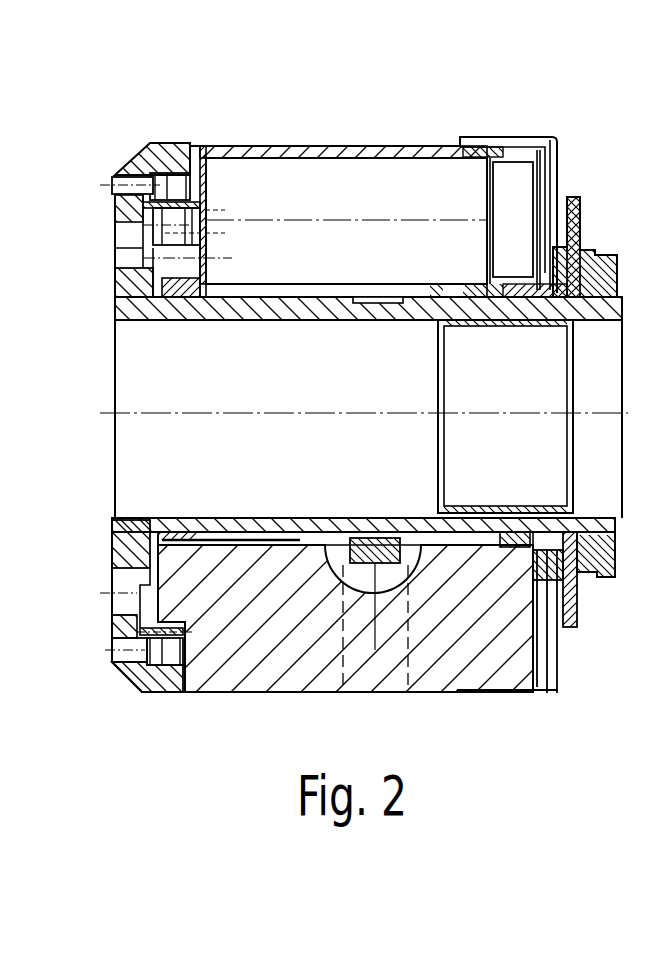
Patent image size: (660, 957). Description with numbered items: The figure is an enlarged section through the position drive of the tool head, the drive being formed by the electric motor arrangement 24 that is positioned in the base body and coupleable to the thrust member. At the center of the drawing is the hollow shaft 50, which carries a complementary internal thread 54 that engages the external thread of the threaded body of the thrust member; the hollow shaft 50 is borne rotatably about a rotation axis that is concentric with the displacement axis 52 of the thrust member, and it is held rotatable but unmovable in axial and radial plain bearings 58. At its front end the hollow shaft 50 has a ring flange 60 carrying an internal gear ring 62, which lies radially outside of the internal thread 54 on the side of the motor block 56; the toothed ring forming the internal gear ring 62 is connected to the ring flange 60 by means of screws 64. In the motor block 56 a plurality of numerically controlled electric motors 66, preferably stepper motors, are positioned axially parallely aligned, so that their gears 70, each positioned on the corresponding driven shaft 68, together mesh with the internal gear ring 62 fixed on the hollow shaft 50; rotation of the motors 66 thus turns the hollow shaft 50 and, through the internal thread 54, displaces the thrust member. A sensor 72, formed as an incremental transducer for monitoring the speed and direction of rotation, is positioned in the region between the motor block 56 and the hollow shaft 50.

The electric motor arrangement 24 is at (356, 140).
The hollow shaft 50 is at (288, 312).
The displacement axis 52 is at (150, 418).
The internal thread 54 is at (508, 327).
The motor block 56 is at (282, 635).
The axial and radial plain bearings 58 is at (425, 545).
The ring flange 60 is at (112, 543).
The internal gear ring 62 is at (155, 145).
The screws 64 is at (112, 207).
The motors 66 is at (395, 187).
The driven shaft 68 is at (200, 203).
The gears 70 is at (185, 196).
The sensor 72 is at (400, 548).